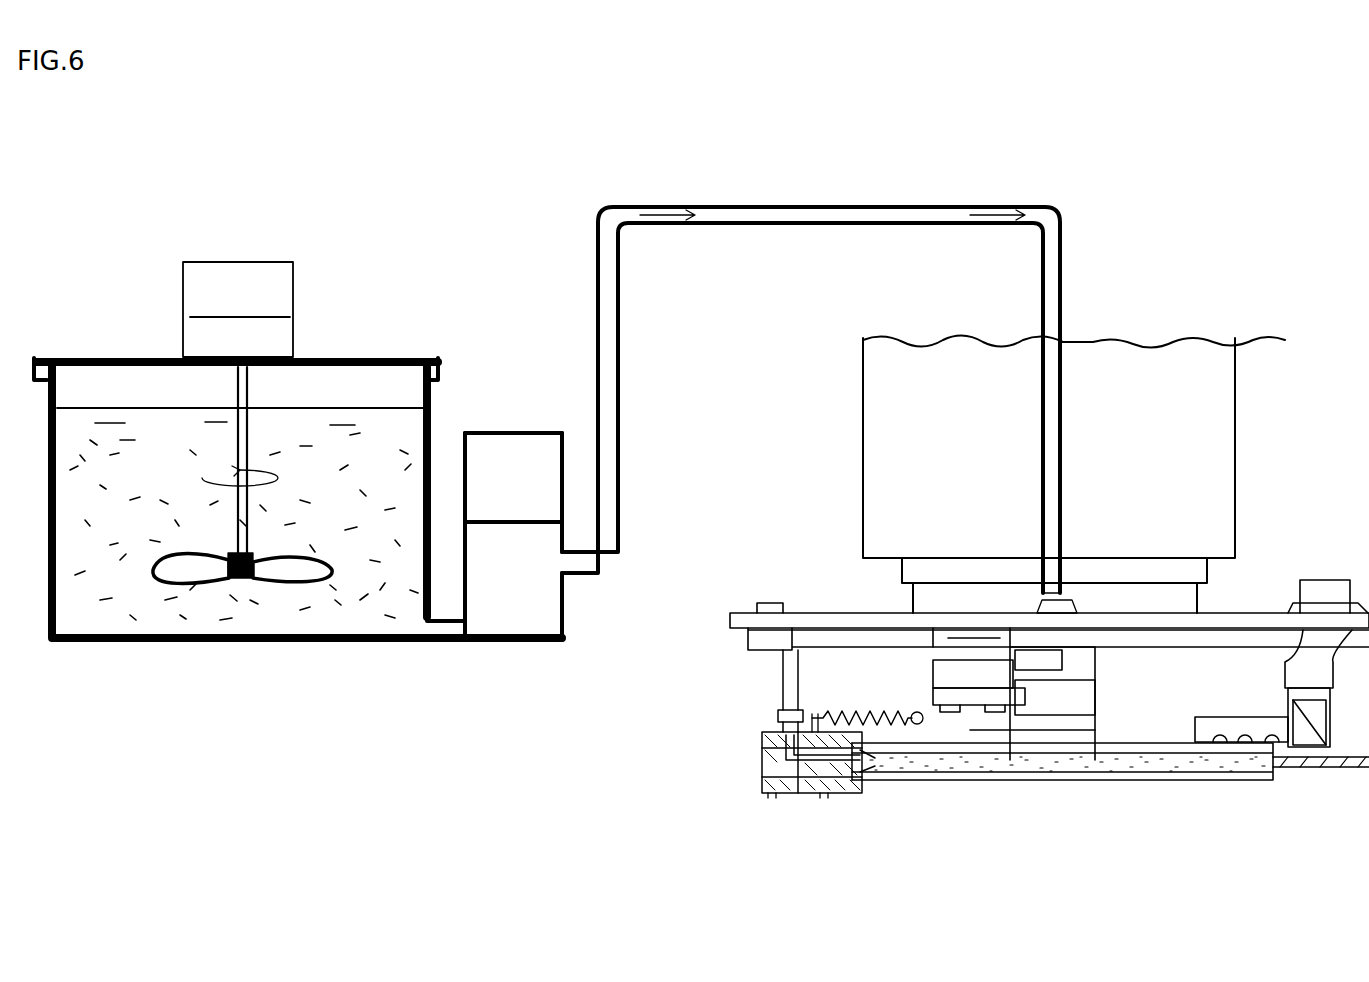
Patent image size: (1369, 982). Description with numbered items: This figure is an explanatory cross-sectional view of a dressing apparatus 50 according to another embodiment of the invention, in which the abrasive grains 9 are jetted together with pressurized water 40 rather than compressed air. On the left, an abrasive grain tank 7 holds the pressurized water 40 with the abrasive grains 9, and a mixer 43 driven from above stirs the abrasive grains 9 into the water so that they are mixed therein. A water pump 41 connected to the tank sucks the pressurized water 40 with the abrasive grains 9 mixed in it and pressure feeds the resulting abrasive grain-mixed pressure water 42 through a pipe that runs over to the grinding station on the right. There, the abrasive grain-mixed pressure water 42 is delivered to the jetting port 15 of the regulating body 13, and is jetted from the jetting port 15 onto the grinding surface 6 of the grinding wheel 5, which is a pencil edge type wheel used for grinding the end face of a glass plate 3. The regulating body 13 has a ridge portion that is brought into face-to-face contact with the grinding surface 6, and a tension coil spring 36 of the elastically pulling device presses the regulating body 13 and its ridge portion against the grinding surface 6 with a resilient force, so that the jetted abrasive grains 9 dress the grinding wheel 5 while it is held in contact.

The glass plate 3 is at (1344, 770).
The grinding wheel 5 is at (1010, 775).
The grinding surface 6 is at (1050, 765).
The abrasive grain tank 7 is at (332, 430).
The abrasive grains 9 is at (119, 590).
The regulating body 13 is at (800, 793).
The jetting port 15 is at (873, 760).
The tension coil spring 36 is at (866, 713).
The pressurized water 40 is at (290, 628).
The water pump 41 is at (507, 450).
The abrasive grain-mixed pressure water 42 is at (612, 400).
The mixer 43 is at (185, 580).
The dressing apparatus 50 is at (1136, 294).